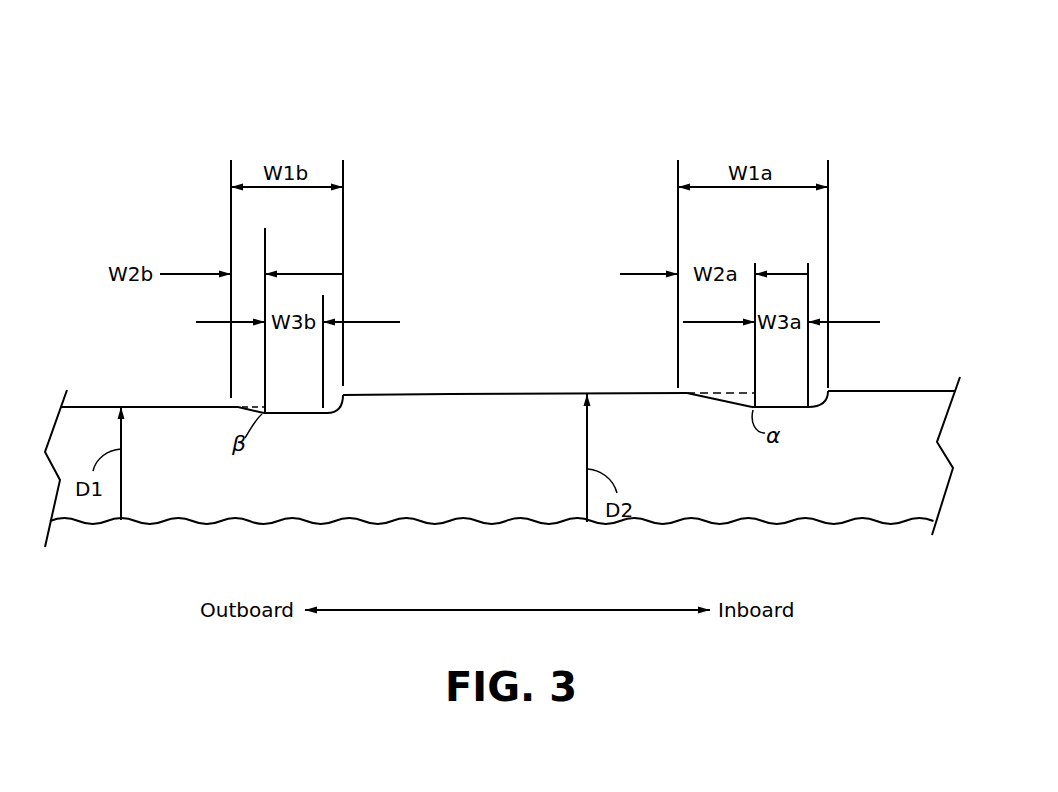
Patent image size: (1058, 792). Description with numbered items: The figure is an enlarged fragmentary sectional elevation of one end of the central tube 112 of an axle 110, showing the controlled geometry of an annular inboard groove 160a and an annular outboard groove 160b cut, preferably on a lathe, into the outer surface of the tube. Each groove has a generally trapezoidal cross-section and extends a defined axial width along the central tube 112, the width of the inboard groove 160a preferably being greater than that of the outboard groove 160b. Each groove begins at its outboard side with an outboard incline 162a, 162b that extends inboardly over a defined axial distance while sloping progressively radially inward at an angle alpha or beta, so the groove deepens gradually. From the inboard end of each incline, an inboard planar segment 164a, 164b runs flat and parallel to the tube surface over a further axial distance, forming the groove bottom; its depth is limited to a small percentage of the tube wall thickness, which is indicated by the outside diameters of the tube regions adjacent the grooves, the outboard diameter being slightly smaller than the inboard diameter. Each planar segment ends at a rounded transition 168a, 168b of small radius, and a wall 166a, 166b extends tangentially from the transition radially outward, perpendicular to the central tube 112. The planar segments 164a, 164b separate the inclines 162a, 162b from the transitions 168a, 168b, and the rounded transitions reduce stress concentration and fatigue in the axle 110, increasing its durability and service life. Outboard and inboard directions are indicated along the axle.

The axle 110 is at (535, 135).
The central tube 112 is at (520, 385).
The inboard groove 160a is at (748, 439).
The outboard groove 160b is at (274, 449).
The outboard incline of inboard groove 162a is at (722, 400).
The outboard incline of outboard groove 162b is at (242, 408).
The inboard planar segment of inboard groove 164a is at (793, 408).
The inboard planar segment of outboard groove 164b is at (296, 415).
The wall of inboard groove 166a is at (843, 392).
The wall of outboard groove 166b is at (345, 396).
The transition of inboard groove 168a is at (825, 400).
The transition of outboard groove 168b is at (341, 408).